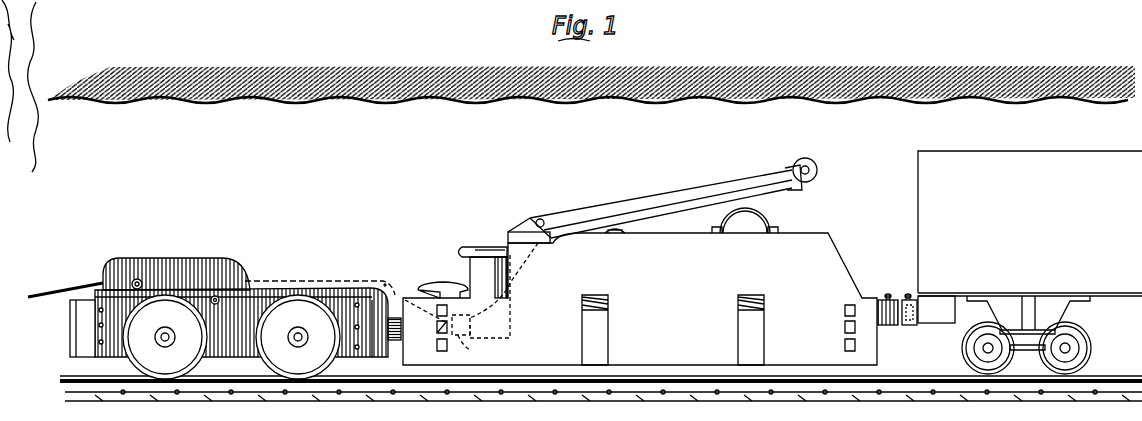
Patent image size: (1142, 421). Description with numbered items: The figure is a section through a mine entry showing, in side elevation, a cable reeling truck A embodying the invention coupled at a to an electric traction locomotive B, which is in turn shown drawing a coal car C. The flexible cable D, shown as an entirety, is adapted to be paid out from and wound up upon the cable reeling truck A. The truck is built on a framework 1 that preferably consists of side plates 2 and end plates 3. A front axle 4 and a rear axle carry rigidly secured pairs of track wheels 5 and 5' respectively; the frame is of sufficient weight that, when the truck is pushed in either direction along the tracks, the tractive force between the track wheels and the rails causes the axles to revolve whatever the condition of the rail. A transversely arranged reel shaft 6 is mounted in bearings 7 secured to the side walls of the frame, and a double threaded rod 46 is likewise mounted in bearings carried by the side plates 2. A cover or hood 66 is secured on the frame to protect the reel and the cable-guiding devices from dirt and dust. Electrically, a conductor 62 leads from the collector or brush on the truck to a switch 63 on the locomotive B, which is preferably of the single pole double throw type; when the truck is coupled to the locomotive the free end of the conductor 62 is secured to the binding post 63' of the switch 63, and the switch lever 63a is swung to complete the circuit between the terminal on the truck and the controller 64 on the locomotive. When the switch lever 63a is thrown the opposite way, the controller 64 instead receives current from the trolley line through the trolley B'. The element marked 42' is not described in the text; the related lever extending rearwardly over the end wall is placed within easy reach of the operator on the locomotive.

The cable reeling truck A is at (214, 304).
The electric traction locomotive B is at (640, 261).
The trolley B' is at (662, 198).
The coal car C is at (1030, 262).
The flexible cable D is at (65, 283).
The coupling point a is at (395, 318).
The framework 1 is at (241, 310).
The side plates 2 is at (177, 337).
The end plates 3 is at (65, 336).
The front axle 4 is at (169, 339).
The track wheels 5 is at (221, 337).
The track wheels 5' is at (344, 367).
The reel shaft 6 is at (240, 282).
The bearing 7 is at (216, 296).
The double threaded rod 46 is at (141, 281).
The conductor 62 is at (332, 278).
The pipe end 42' is at (373, 267).
The switch 63 is at (468, 339).
The binding post 63' is at (425, 332).
The switch lever 63a is at (504, 290).
The controller 64 is at (483, 277).
The cover 66 is at (157, 261).